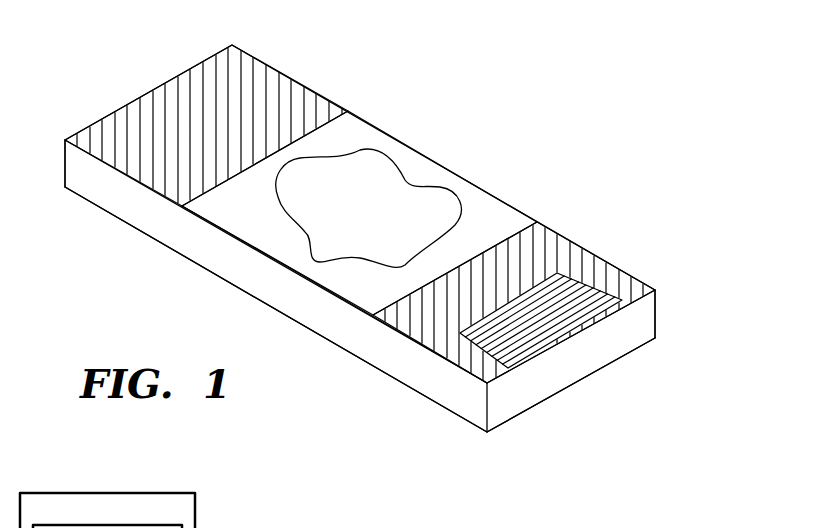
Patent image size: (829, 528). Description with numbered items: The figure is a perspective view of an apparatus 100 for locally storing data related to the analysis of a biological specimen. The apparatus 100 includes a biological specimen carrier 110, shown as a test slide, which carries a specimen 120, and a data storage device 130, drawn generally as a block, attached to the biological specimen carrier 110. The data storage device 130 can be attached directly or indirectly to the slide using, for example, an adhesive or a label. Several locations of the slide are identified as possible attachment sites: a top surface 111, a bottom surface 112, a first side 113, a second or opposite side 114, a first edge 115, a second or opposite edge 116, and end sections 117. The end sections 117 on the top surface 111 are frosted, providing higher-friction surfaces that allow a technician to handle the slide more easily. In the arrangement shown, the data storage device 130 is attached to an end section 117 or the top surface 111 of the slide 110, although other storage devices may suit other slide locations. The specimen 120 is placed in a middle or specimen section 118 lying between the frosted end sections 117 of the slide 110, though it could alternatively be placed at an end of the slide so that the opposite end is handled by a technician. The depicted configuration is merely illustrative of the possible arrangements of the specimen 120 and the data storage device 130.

The apparatus 100 is at (140, 46).
The biological specimen carrier 110 is at (587, 381).
The top surface 111 is at (253, 220).
The bottom surface 112 is at (448, 414).
The first side 113 is at (380, 355).
The second side 114 is at (655, 310).
The first edge 115 is at (607, 345).
The second edge 116 is at (63, 153).
The end section 117 is at (273, 83).
The specimen section 118 is at (372, 97).
The specimen 120 is at (385, 221).
The data storage device 130 is at (573, 292).